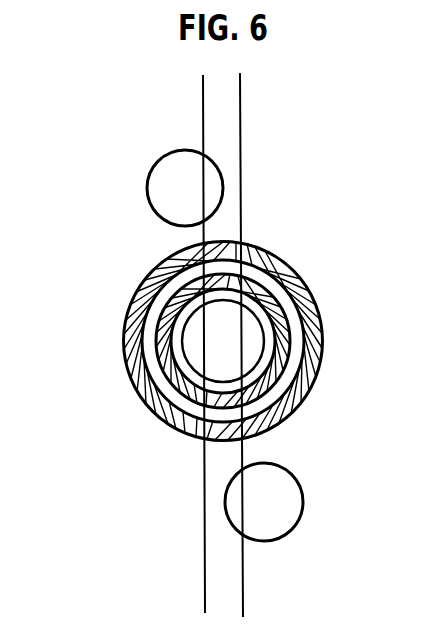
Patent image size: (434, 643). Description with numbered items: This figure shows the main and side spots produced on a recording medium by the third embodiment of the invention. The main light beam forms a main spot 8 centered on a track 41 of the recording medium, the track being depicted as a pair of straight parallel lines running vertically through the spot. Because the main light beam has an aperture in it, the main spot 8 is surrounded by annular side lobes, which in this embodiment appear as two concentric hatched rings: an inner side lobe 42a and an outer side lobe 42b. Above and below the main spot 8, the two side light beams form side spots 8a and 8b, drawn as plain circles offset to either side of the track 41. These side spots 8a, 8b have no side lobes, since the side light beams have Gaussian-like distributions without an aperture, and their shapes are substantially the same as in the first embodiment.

The track 41 is at (230, 113).
The side spot 8a is at (157, 169).
The side spot 8b is at (289, 488).
The main spot 8 is at (232, 329).
The side lobe 42b is at (282, 270).
The side lobe 42a is at (163, 356).